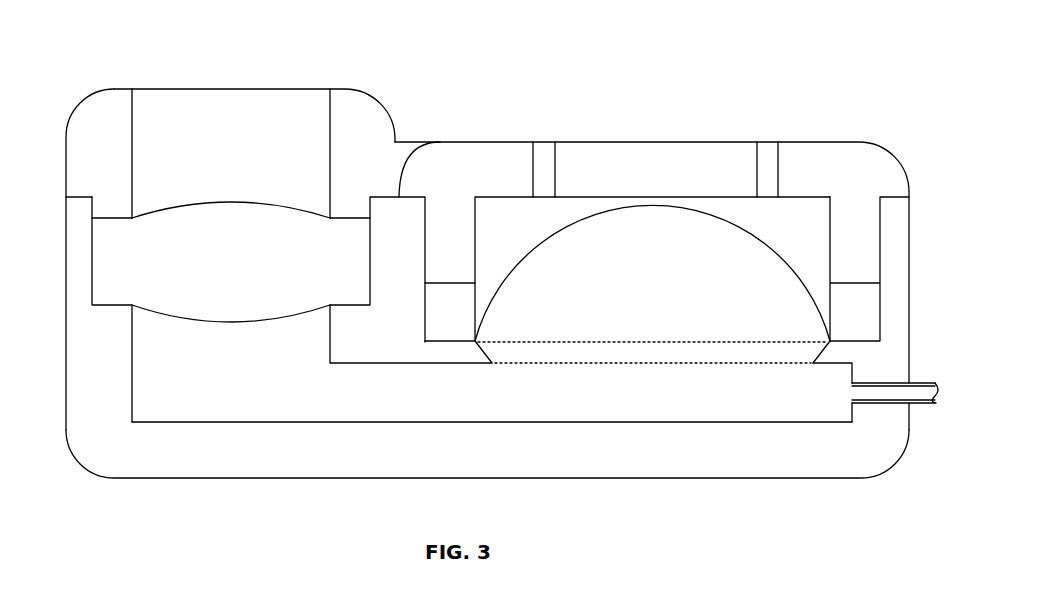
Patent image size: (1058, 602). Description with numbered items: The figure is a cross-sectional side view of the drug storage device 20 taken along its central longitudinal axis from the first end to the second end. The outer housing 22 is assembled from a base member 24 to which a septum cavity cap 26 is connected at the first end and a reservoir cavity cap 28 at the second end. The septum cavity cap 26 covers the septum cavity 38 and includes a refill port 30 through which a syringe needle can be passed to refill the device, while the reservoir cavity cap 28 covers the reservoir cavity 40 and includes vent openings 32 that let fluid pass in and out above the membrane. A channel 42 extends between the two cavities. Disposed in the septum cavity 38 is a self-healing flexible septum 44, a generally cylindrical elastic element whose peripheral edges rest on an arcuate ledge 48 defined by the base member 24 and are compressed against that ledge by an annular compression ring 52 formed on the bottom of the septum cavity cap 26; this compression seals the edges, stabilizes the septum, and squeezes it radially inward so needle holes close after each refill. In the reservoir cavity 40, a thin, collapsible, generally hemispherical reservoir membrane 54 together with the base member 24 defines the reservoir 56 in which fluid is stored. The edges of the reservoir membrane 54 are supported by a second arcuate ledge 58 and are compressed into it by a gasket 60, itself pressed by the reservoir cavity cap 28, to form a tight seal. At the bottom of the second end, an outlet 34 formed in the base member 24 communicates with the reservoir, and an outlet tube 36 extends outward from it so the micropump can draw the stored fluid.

The drug storage device 20 is at (868, 74).
The outer housing 22 is at (930, 169).
The base member 24 is at (802, 468).
The septum cavity cap 26 is at (82, 121).
The reservoir cavity cap 28 is at (647, 148).
The refill port 30 is at (277, 76).
The vent openings 32 is at (542, 172).
The outlet 34 is at (897, 380).
The outlet tube 36 is at (928, 388).
The septum cavity 38 is at (217, 354).
The reservoir cavity 40 is at (500, 239).
The channel 42 is at (397, 403).
The septum 44 is at (217, 273).
The arcuate ledge 48 is at (112, 307).
The annular compression ring 52 is at (122, 236).
The reservoir membrane 54 is at (758, 242).
The reservoir 56 is at (639, 329).
The arcuate ledge 58 is at (460, 343).
The gasket 60 is at (437, 323).